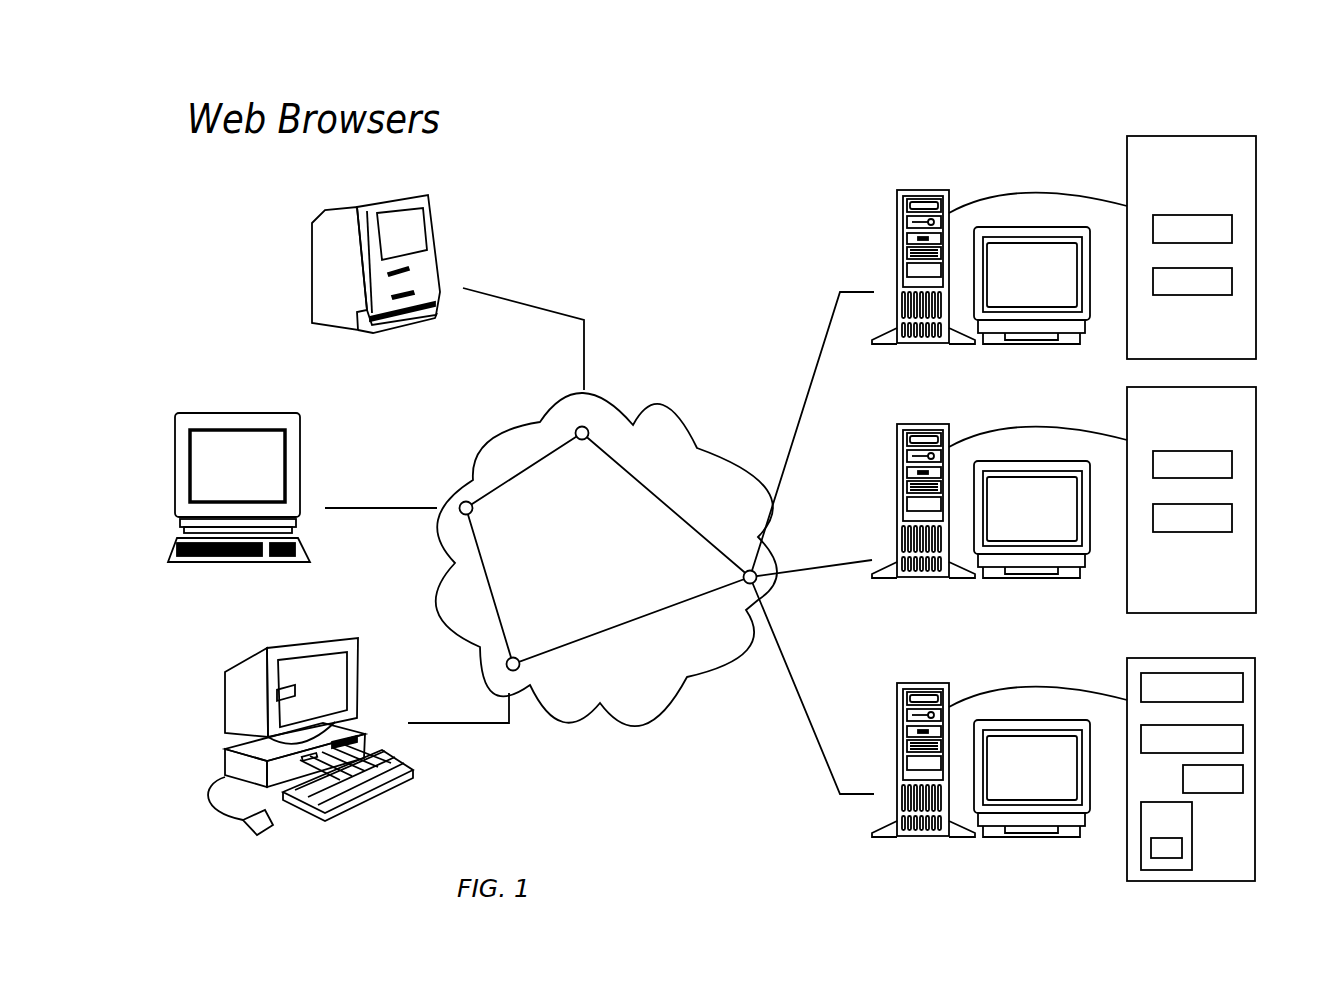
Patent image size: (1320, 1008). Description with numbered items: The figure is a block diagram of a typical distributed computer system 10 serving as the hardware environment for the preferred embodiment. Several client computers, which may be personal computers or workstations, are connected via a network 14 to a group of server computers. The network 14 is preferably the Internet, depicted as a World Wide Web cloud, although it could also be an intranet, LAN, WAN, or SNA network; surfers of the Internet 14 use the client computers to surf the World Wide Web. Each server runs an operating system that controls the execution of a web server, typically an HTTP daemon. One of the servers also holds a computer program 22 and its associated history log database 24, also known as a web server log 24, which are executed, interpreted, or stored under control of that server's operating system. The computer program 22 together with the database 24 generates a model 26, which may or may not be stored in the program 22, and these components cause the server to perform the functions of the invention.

The distributed computer system 10 is at (664, 372).
The network 14 is at (756, 571).
The computer program 22 is at (1192, 837).
The history log database 24 is at (1243, 775).
The model 26 is at (1151, 847).